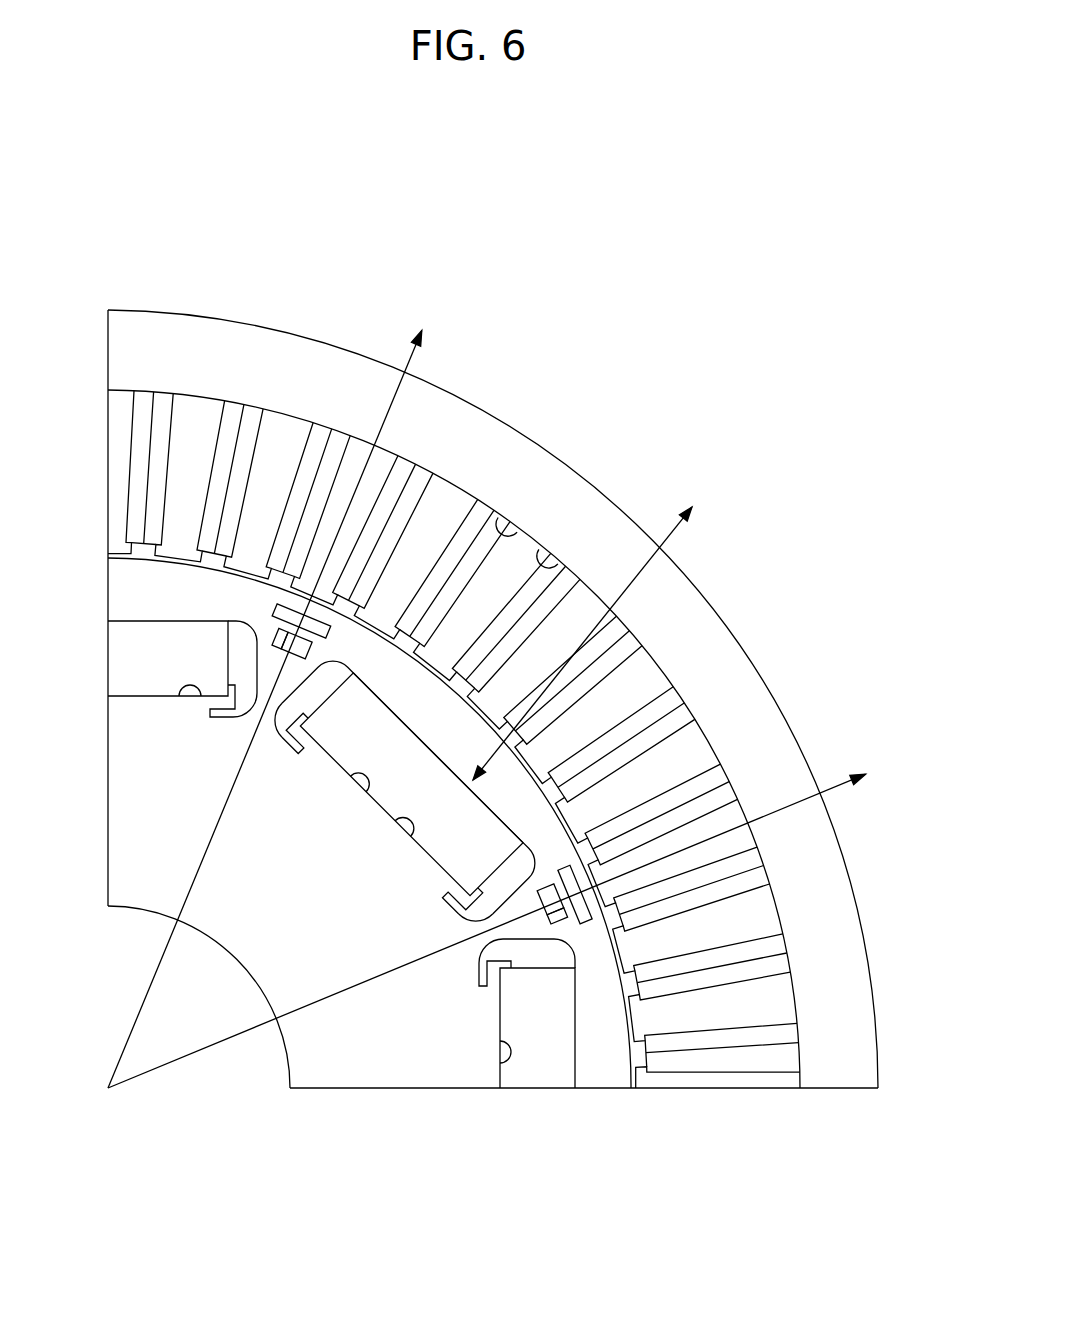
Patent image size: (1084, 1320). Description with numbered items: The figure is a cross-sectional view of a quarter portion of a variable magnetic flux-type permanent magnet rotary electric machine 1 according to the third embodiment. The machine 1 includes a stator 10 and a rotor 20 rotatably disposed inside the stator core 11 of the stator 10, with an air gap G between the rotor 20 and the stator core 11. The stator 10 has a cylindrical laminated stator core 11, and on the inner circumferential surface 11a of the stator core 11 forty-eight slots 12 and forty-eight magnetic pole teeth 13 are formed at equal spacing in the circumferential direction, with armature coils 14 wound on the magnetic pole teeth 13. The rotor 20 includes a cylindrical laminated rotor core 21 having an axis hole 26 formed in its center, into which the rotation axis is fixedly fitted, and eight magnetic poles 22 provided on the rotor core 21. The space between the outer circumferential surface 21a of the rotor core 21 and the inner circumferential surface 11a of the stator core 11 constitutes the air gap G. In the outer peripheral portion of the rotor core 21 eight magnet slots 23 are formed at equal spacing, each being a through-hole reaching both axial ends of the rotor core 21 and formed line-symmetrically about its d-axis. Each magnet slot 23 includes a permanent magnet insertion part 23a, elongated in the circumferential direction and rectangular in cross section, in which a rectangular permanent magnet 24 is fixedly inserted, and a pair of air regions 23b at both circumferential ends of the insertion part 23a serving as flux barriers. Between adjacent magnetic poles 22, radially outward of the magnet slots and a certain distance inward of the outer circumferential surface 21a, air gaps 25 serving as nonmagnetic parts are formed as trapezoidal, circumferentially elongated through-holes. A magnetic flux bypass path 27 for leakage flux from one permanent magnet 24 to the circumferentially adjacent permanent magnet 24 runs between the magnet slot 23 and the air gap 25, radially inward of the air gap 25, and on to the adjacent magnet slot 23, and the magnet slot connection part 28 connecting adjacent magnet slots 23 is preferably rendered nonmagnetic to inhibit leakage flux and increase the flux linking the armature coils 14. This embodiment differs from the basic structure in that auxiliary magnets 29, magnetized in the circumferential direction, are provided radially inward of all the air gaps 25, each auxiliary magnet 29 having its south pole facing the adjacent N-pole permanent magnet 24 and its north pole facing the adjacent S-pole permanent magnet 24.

The variable magnetic flux-type permanent magnet rotary electric machine 1 is at (240, 243).
The stator 10 is at (112, 306).
The stator core 11 is at (858, 1052).
The inner circumferential surface of the stator core 11a is at (165, 565).
The slots 12 is at (552, 556).
The magnetic pole teeth 13 is at (643, 678).
The armature coils 14 is at (767, 968).
The rotor 20 is at (636, 1092).
The rotor core 21 is at (462, 1068).
The outer circumferential surface of the rotor core 21a is at (165, 572).
The magnetic poles 22 is at (203, 611).
The magnet slots 23 is at (179, 698).
The permanent magnet insertion part 23a is at (350, 777).
The air regions 23b is at (296, 748).
The permanent magnet 24 is at (167, 668).
The air gaps 25 is at (303, 617).
The axis hole 26 is at (250, 1128).
The magnetic flux bypass path 27 is at (322, 642).
The magnet slot connection part 28 is at (228, 722).
The auxiliary magnets 29 is at (283, 637).
The air gap G is at (125, 556).